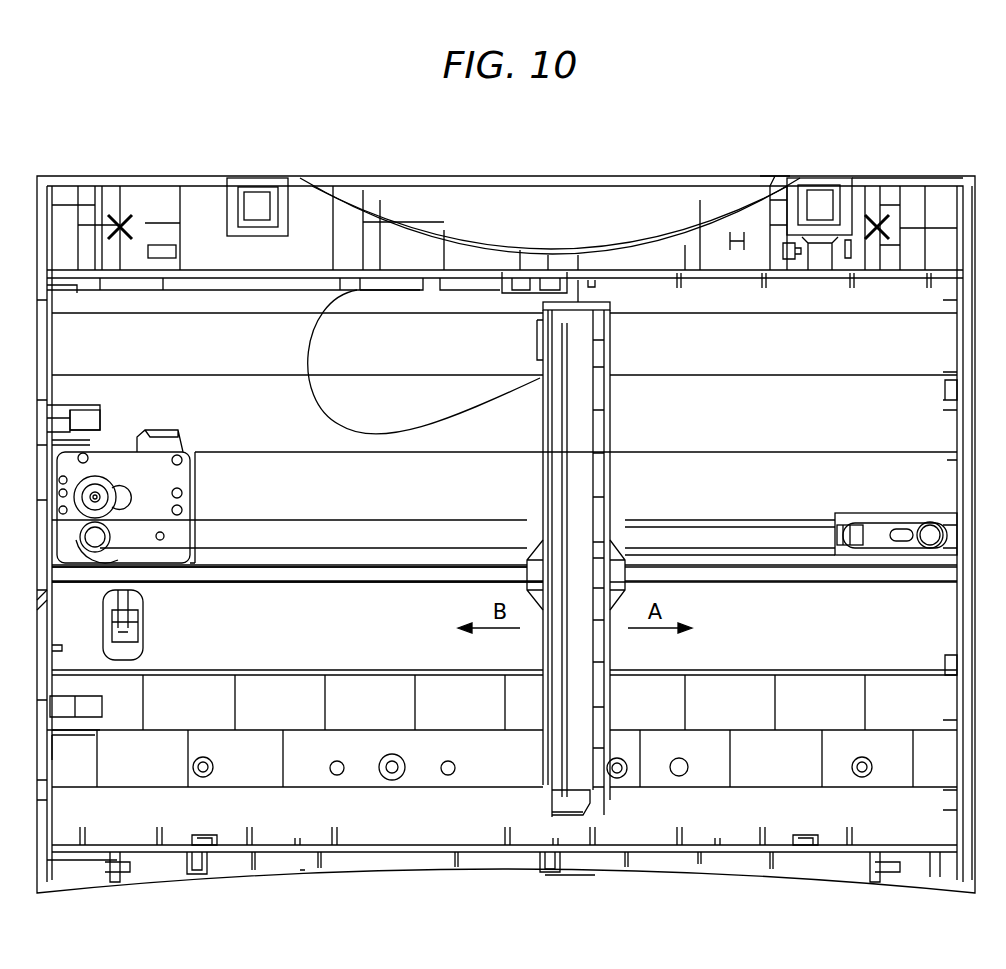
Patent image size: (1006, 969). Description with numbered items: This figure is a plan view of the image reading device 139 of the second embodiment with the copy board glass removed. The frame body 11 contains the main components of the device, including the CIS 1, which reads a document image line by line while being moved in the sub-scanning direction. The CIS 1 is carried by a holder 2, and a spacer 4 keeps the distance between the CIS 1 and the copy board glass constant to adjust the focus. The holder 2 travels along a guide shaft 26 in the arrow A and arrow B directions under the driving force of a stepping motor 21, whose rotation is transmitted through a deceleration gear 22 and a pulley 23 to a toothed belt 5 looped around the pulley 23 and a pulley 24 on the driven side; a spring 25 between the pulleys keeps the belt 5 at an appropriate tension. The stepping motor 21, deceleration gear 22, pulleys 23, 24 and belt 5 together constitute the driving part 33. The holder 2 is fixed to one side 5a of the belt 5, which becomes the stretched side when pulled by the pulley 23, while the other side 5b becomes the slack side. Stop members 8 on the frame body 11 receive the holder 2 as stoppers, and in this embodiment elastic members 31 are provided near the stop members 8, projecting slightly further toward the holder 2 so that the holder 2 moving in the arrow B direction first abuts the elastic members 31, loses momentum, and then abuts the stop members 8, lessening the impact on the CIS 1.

The CIS 1 is at (560, 478).
The holder 2 is at (600, 408).
The spacer 4 is at (542, 310).
The belt 5 is at (722, 520).
The one side of the belt 5a is at (758, 549).
The other side of the belt 5b is at (781, 520).
The stop members 8 is at (73, 404).
The frame body 11 is at (915, 178).
The stepping motor 21 is at (125, 482).
The deceleration gear 22 is at (98, 472).
The pulley 23 is at (78, 570).
The pulley on a driven side 24 is at (926, 552).
The spring 25 is at (849, 549).
The guide shaft 26 is at (300, 583).
The elastic members 31 is at (92, 410).
The driving part 33 is at (212, 512).
The image reading device 139 is at (813, 176).